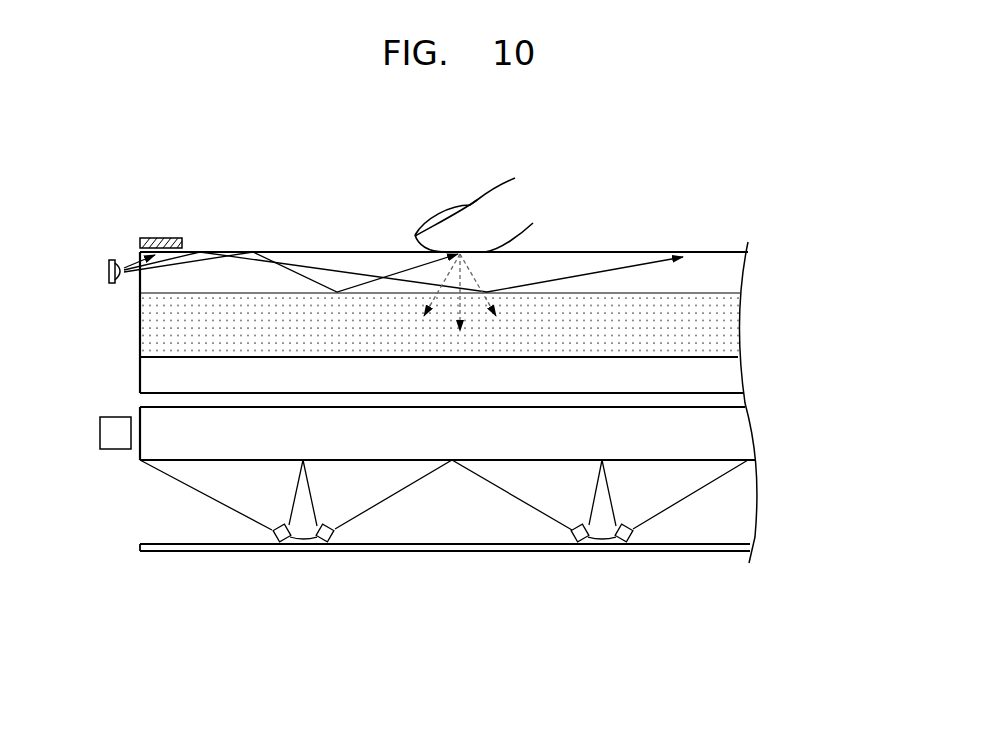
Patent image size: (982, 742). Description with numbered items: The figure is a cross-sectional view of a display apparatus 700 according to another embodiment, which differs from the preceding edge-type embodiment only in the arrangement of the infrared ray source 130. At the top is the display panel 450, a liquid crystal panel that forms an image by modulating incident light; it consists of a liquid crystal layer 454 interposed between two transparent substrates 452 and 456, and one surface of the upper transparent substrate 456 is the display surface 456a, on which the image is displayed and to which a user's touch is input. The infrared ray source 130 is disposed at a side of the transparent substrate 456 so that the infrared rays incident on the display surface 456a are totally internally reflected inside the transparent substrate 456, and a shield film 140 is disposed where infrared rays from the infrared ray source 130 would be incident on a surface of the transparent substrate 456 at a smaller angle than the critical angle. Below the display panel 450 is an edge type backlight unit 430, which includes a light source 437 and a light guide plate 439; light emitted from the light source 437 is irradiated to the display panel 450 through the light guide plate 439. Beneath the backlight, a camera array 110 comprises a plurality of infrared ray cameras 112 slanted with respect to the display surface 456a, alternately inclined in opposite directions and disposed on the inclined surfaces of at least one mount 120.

The display apparatus 700 is at (728, 196).
The display panel 450 is at (822, 238).
The transparent substrate 456 is at (733, 272).
The display surface 456a is at (630, 251).
The liquid crystal layer 454 is at (726, 323).
The transparent substrate 452 is at (727, 372).
The shield film 140 is at (158, 240).
The infrared ray source 130 is at (108, 262).
The backlight unit 430 is at (131, 345).
The light source 437 is at (103, 437).
The light guide plate 439 is at (147, 418).
The camera array 110 is at (258, 526).
The infrared ray camera 112 is at (278, 541).
The mount 120 is at (305, 539).